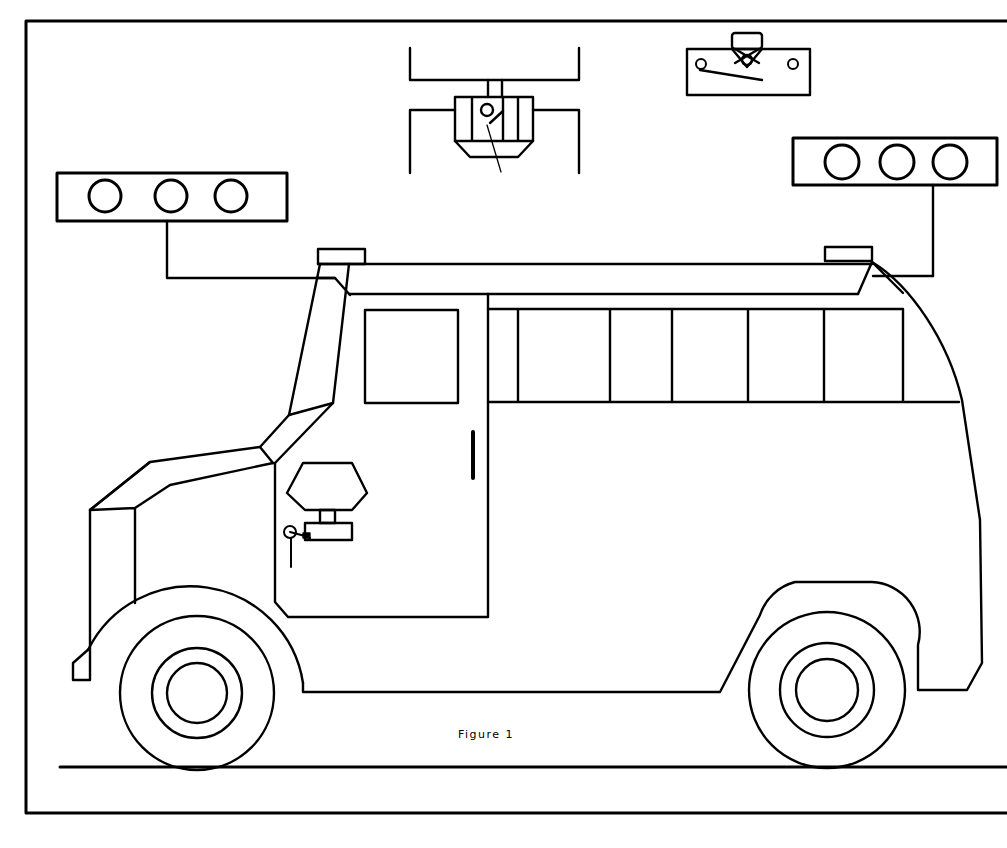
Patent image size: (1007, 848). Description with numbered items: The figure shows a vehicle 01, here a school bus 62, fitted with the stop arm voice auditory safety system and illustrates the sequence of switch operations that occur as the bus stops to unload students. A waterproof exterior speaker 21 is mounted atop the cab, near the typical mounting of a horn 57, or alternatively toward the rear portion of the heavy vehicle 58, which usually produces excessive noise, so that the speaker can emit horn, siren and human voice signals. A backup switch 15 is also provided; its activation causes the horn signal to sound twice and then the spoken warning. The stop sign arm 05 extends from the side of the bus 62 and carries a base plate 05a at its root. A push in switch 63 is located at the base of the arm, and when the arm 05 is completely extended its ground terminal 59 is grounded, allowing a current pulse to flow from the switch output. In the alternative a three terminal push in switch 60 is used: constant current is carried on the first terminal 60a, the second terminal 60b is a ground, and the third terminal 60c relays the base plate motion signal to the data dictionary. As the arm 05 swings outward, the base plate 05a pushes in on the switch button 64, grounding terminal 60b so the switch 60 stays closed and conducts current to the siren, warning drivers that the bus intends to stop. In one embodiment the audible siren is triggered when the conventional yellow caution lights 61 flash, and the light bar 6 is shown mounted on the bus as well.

The vehicle 01 is at (937, 338).
The stop sign arm 05 is at (410, 63).
The base plate 05a is at (373, 558).
The front warning light bar 6 is at (287, 173).
The yellow caution lights 61 is at (827, 138).
The backup switch 15 is at (270, 432).
The waterproof exterior speaker 21 is at (840, 247).
The horn 57 is at (872, 261).
The portion of the heavy vehicle 58 is at (902, 293).
The ground terminal 59 is at (320, 557).
The three terminal push in switch 60 is at (684, 52).
The first terminal 60a is at (697, 68).
The ground terminal 60b is at (798, 64).
The third terminal 60c is at (760, 55).
The school bus 62 is at (640, 474).
The push in switch 63 is at (533, 128).
The switch button 64 is at (298, 530).